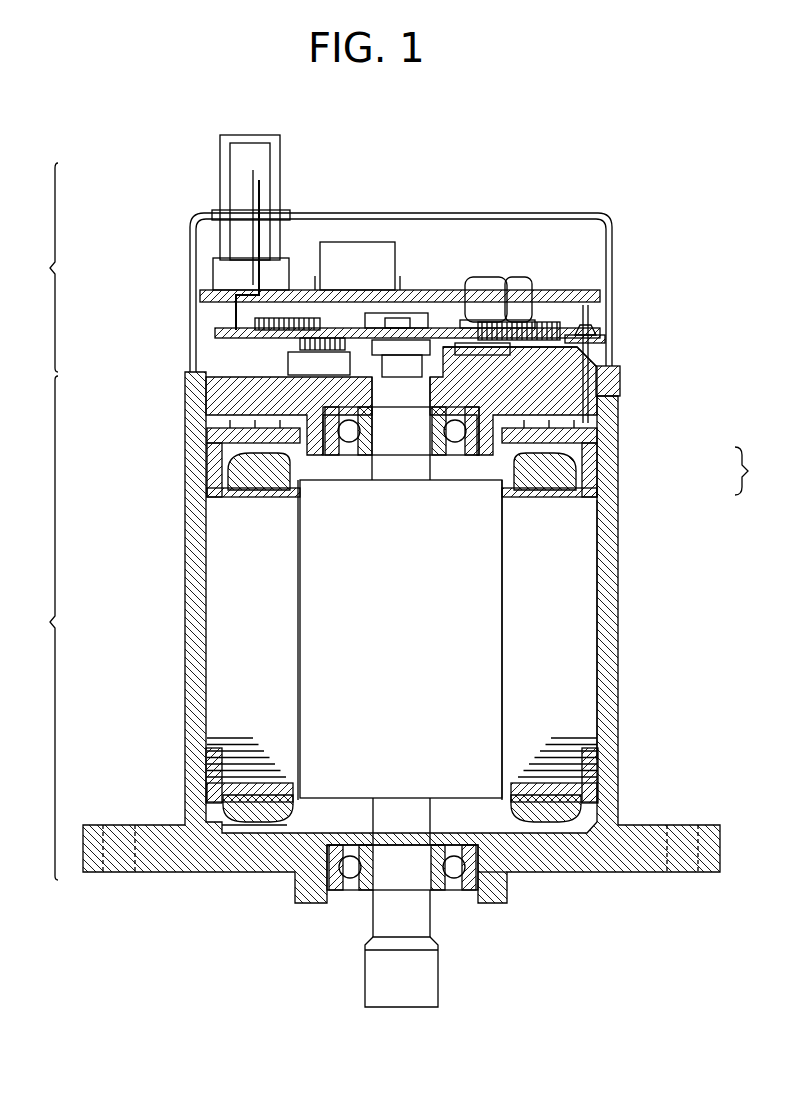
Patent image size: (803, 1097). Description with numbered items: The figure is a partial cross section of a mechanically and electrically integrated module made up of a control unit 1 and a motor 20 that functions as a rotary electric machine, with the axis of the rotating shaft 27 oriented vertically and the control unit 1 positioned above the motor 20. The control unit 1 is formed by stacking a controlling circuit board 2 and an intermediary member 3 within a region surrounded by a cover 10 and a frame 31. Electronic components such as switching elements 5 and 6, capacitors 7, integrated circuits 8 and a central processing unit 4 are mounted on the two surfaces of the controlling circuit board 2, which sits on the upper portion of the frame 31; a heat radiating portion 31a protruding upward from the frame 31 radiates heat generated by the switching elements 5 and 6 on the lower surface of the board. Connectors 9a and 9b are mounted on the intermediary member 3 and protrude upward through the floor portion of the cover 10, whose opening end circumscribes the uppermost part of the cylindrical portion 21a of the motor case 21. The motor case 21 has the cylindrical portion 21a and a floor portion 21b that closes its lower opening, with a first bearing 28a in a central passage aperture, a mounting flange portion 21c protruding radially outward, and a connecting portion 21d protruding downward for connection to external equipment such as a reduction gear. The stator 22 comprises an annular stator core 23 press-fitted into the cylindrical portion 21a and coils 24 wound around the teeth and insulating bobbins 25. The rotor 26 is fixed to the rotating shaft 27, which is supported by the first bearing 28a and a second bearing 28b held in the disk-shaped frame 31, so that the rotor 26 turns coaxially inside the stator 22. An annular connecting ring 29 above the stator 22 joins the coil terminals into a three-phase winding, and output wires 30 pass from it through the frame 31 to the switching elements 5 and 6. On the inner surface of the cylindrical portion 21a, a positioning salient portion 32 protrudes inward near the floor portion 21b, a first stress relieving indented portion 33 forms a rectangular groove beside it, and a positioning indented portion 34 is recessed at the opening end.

The control unit 1 is at (44, 267).
The controlling circuit board 2 is at (215, 333).
The intermediary member 3 is at (205, 295).
The central processing unit (CPU) 4 is at (297, 297).
The switching element 5 is at (553, 335).
The switching element 6 is at (515, 320).
The capacitor 7 is at (487, 290).
The integrated circuit (IC) 8 is at (413, 300).
The connector 9a is at (230, 143).
The connector 9b is at (250, 200).
The cover 10 is at (190, 240).
The motor 20 is at (33, 628).
The motor case 21 is at (620, 592).
The cylindrical portion 21a is at (608, 640).
The floor portion 21b is at (255, 872).
The mounting flange portion 21c is at (123, 872).
The connecting portion 21d is at (500, 882).
The stator 22 is at (447, 612).
The stator core 23 is at (585, 507).
The coil 24 is at (597, 462).
The bobbin 25 is at (207, 485).
The rotor 26 is at (490, 580).
The rotating shaft 27 is at (425, 920).
The first bearing 28a is at (340, 903).
The second bearing 28b is at (318, 444).
The connecting ring 29 is at (598, 440).
The output wire 30 is at (575, 342).
The frame 31 is at (618, 376).
The heat radiating portion 31a is at (582, 362).
The positioning salient portion 32 is at (215, 813).
The first stress relieving indented portion 33 is at (207, 763).
The positioning indented portion 34 is at (205, 408).